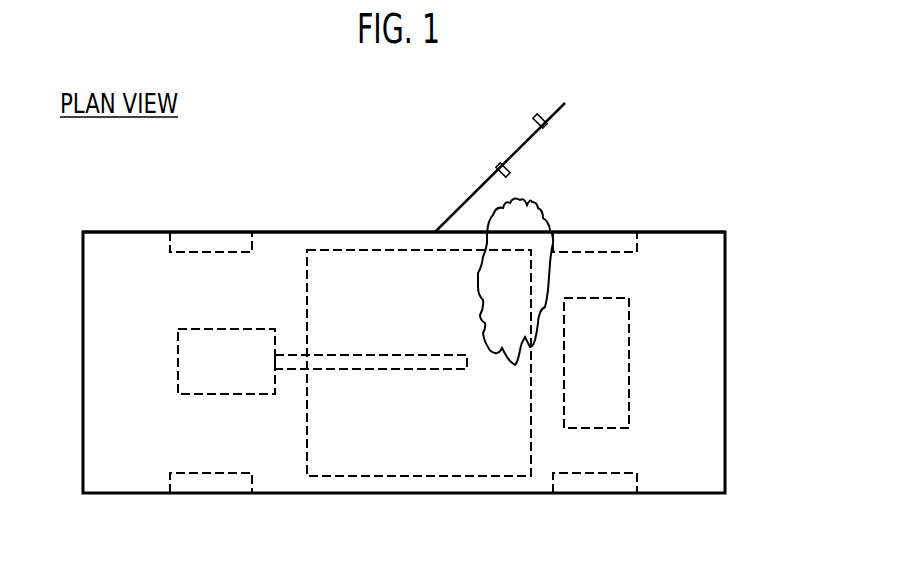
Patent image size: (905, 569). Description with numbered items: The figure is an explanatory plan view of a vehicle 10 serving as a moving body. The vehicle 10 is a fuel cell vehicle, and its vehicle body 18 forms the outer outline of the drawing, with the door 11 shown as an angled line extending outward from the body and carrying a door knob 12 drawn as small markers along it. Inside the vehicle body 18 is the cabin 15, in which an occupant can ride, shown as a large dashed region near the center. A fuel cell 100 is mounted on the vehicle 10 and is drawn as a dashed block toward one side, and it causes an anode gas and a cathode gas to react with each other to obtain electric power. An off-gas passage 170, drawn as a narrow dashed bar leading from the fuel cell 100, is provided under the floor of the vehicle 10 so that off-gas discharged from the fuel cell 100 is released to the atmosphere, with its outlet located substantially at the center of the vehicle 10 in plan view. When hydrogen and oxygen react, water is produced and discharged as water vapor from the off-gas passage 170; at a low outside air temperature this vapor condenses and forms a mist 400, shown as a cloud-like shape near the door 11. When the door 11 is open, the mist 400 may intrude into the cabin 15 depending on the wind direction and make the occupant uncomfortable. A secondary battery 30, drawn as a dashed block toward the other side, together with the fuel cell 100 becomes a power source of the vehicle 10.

The vehicle 10 is at (738, 172).
The door 11 is at (508, 153).
The door knob 12 is at (542, 113).
The cabin 15 is at (427, 249).
The vehicle body 18 is at (310, 232).
The secondary battery 30 is at (630, 337).
The fuel cell 100 is at (197, 329).
The off-gas passage 170 is at (340, 355).
The mist 400 is at (540, 200).